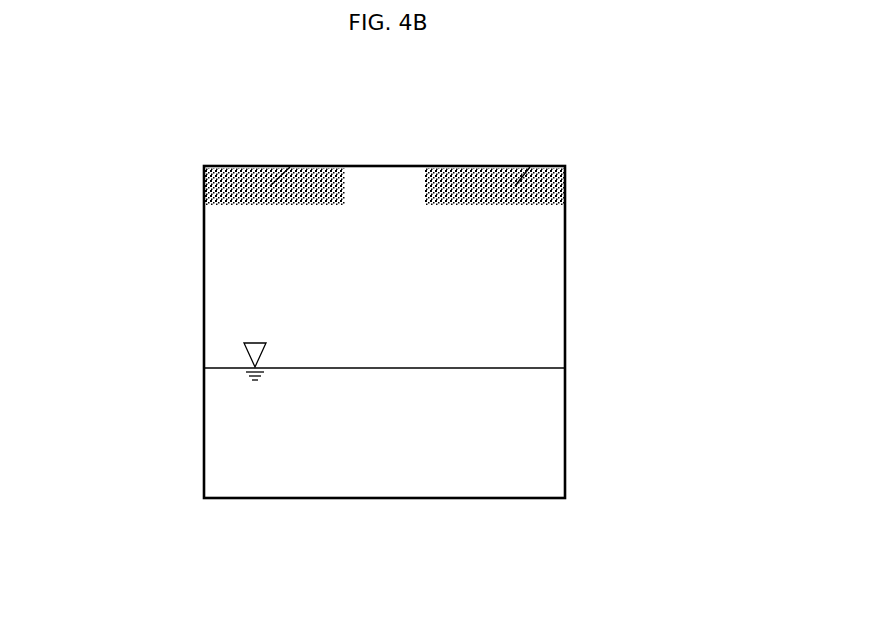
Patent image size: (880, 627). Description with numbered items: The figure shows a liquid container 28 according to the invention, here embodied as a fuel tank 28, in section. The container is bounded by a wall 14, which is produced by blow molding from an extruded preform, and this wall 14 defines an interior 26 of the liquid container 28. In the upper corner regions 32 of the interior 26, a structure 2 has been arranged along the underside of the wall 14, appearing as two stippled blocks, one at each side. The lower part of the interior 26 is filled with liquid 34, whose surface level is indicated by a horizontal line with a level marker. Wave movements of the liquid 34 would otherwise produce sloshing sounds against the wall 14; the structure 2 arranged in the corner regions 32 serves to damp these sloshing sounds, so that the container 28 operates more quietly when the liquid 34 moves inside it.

The liquid container 28 is at (158, 160).
The corner regions 32 is at (210, 165).
The structure 2 is at (290, 167).
The wall 14 is at (567, 278).
The interior 26 is at (376, 302).
The liquid 34 is at (530, 421).